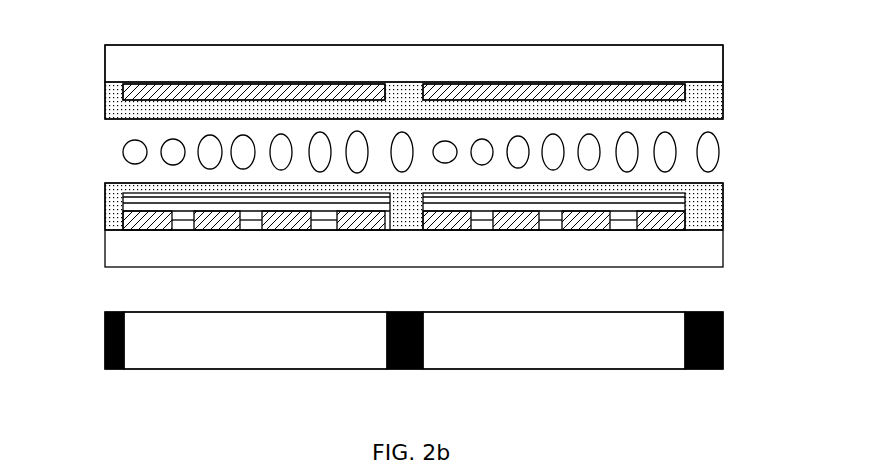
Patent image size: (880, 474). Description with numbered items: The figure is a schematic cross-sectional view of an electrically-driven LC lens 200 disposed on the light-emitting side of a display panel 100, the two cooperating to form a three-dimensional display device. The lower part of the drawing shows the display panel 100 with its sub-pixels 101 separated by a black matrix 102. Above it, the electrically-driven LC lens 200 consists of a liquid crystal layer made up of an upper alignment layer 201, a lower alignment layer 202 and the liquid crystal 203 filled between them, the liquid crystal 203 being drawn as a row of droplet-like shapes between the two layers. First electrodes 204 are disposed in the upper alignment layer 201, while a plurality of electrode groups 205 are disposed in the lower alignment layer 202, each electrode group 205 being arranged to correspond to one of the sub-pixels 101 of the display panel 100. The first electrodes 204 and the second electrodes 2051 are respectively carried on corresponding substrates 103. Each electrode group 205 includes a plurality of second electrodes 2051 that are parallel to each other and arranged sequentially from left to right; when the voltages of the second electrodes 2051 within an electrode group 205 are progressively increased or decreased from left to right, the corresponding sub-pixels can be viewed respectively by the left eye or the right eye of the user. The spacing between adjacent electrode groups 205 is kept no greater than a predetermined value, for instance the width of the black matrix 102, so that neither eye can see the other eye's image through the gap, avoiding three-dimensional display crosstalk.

The display panel 100 is at (90, 345).
The sub-pixel 101 is at (404, 361).
The black matrix 102 is at (456, 348).
The substrate 103 is at (399, 138).
The electrically-driven LC lens 200 is at (100, 112).
The upper alignment layer 201 is at (225, 38).
The lower alignment layer 202 is at (442, 195).
The liquid crystal 203 is at (451, 136).
The first electrode 204 is at (404, 55).
The electrode group 205 is at (412, 191).
The second electrode 2051 is at (360, 220).